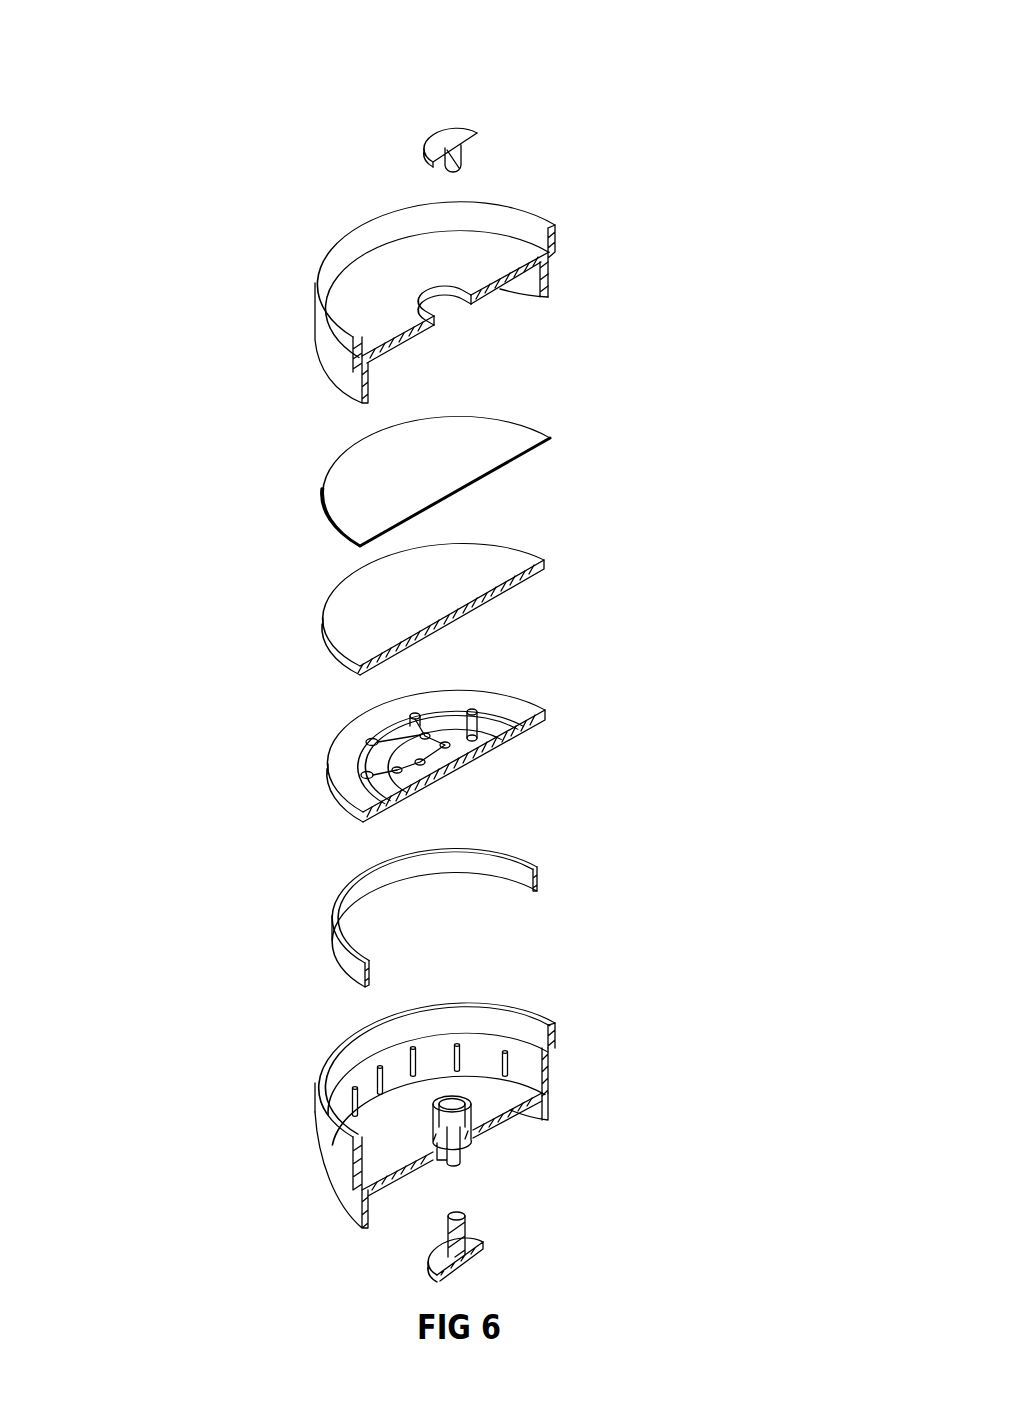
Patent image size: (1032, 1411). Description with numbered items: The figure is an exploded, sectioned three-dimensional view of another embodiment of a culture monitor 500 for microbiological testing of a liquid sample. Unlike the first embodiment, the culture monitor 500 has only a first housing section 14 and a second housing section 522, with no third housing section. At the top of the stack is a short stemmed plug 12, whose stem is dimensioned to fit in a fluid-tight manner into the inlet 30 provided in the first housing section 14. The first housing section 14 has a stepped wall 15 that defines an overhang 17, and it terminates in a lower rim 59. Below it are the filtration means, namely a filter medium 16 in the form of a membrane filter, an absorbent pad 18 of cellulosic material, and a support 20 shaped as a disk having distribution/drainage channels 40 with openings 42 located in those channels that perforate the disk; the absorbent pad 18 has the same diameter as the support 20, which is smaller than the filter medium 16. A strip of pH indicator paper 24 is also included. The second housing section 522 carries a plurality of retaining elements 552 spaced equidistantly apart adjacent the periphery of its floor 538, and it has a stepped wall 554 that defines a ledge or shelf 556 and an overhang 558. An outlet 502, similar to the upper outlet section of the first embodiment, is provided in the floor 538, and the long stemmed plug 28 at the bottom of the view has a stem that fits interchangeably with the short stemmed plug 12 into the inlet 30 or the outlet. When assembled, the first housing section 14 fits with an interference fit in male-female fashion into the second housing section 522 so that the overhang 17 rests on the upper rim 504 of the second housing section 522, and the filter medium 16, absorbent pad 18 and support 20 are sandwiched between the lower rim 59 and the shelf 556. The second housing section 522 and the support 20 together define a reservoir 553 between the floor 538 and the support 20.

The culture monitor 500 is at (722, 171).
The short stemmed plug 12 is at (455, 122).
The first housing section 14 is at (568, 193).
The stepped wall 15 is at (313, 348).
The overhang 17 is at (571, 272).
The lower rim 59 is at (569, 313).
The inlet 30 is at (477, 330).
The filter medium 16 is at (572, 426).
The absorbent pad 18 is at (573, 541).
The support 20 is at (570, 683).
The distribution/drainage channels 40 is at (473, 703).
The openings 42 is at (341, 770).
The strip of pH indicator paper 24 is at (557, 876).
The upper rim 504 is at (331, 1016).
The second housing section 522 is at (575, 1011).
The floor 538 is at (387, 1123).
The retaining elements 552 is at (457, 1047).
The reservoir 553 is at (455, 1076).
The ledge or shelf 556 is at (572, 1053).
The overhang 558 is at (573, 1101).
The stepped wall 554 is at (320, 1168).
The outlet 502 is at (495, 1151).
The long stemmed plug 28 is at (495, 1234).